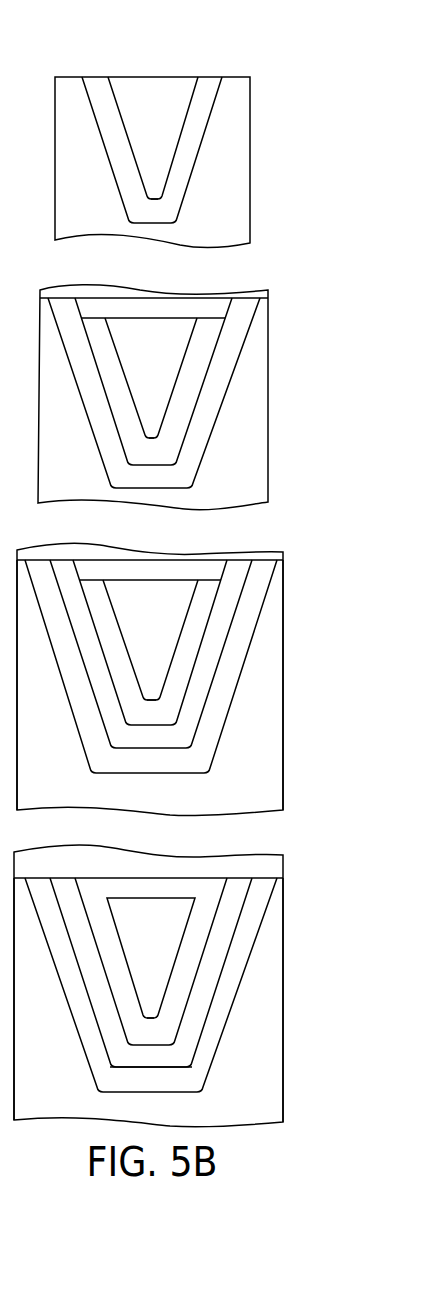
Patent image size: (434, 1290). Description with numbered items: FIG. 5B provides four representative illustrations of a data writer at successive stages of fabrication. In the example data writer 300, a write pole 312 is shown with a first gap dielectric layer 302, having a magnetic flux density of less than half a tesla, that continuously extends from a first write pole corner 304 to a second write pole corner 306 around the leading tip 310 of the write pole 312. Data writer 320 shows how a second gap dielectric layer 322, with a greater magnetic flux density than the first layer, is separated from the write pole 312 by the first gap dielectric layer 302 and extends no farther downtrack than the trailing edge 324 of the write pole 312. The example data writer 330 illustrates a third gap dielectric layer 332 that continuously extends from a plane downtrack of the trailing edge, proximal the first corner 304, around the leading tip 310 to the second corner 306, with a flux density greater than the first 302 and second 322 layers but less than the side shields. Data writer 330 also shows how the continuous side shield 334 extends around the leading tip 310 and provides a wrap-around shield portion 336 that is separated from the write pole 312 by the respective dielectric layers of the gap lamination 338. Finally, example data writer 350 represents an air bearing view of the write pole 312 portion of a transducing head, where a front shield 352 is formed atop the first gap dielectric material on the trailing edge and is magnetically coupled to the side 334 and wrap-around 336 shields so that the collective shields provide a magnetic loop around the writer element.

The data writer 300 is at (246, 70).
The first gap dielectric layer 302 is at (203, 134).
The first write pole corner 304 is at (110, 75).
The second write pole corner 306 is at (197, 75).
The leading tip 310 is at (168, 202).
The write pole 312 is at (136, 148).
The data writer 320 is at (245, 288).
The second gap dielectric layer 322 is at (135, 487).
The trailing edge 324 is at (134, 316).
The data writer 330 is at (244, 547).
The third gap dielectric layer 332 is at (135, 769).
The continuous side shield 334 is at (19, 724).
The wrap-around shield portion 336 is at (135, 800).
The gap lamination 338 is at (97, 582).
The data writer 350 is at (243, 850).
The front shield 352 is at (26, 873).